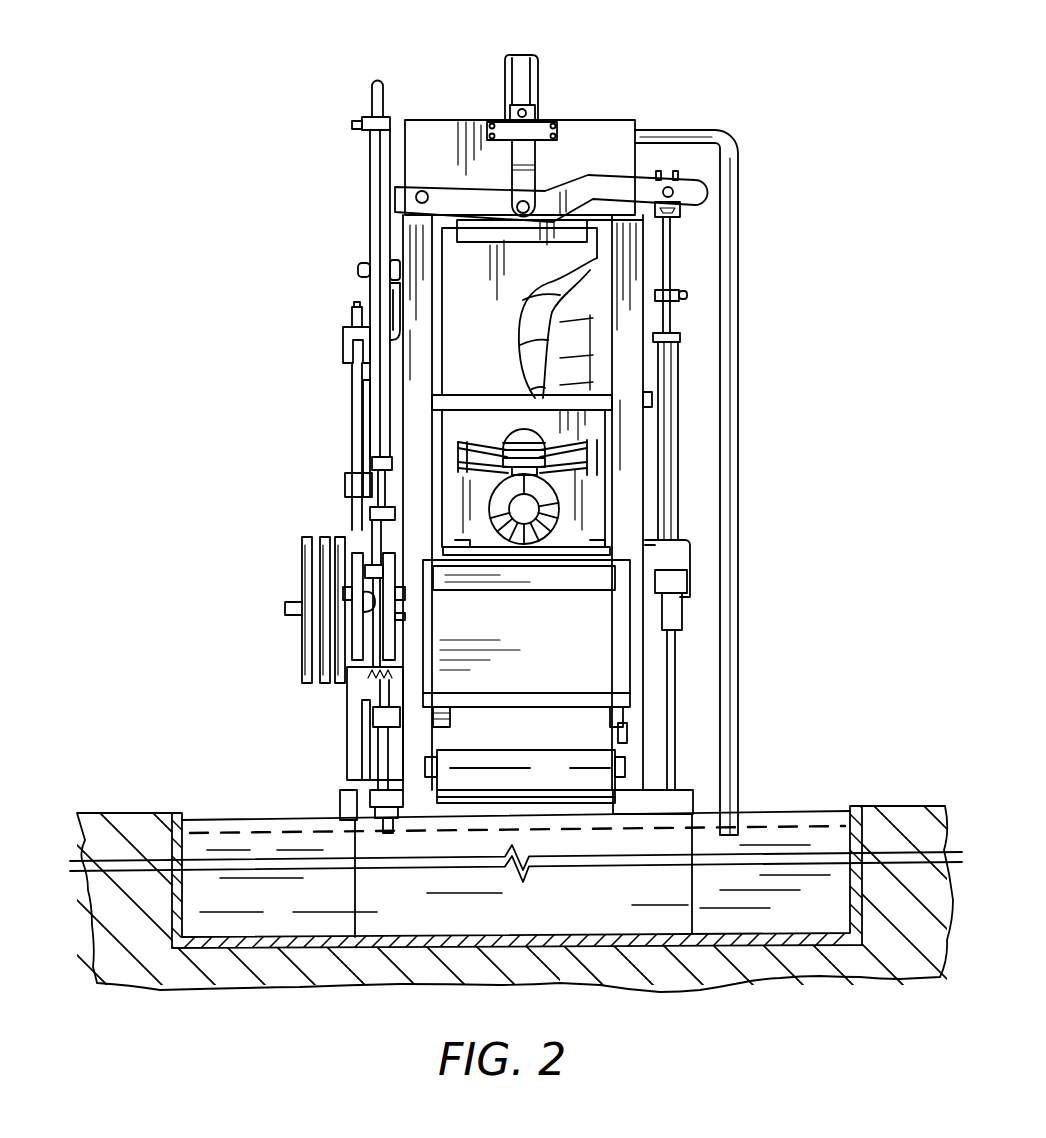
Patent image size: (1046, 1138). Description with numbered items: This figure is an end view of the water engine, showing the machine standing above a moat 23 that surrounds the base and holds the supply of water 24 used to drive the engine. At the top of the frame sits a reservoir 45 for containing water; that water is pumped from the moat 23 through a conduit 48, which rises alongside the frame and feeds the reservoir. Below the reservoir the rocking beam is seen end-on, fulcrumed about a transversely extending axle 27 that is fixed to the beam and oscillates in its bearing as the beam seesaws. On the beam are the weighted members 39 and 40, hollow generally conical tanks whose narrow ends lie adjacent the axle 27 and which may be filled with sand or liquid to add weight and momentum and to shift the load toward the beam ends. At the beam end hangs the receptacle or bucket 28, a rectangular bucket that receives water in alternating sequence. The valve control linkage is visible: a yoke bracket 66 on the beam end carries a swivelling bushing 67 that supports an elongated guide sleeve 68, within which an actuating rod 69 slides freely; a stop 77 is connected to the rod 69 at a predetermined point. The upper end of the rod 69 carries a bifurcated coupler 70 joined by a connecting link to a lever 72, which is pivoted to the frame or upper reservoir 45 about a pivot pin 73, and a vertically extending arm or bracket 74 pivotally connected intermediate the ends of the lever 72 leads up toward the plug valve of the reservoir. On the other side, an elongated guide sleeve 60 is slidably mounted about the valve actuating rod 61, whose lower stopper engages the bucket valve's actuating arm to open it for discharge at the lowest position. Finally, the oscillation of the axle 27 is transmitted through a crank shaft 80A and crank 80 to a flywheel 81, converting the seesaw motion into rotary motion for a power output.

The moat 23 is at (850, 806).
The water 24 is at (775, 808).
The axle 27 is at (398, 603).
The receptacle or bucket 28 is at (597, 657).
The weighted member 39 is at (540, 325).
The weighted member 40 is at (553, 523).
The reservoir 45 is at (438, 119).
The conduit 48 is at (742, 727).
The guide sleeve 60 is at (372, 283).
The valve actuating rod 61 is at (378, 688).
The yoke bracket 66 is at (692, 560).
The bushing 67 is at (690, 584).
The guide sleeve 68 is at (672, 442).
The actuating rod 69 is at (676, 335).
The bifurcated coupler 70 is at (682, 216).
The lever 72 is at (590, 178).
The pivot pin 73 is at (428, 191).
The arm or bracket 74 is at (532, 186).
The stop 77 is at (688, 294).
The crank 80 is at (372, 545).
The crank shaft 80A is at (365, 608).
The flywheel 81 is at (300, 655).